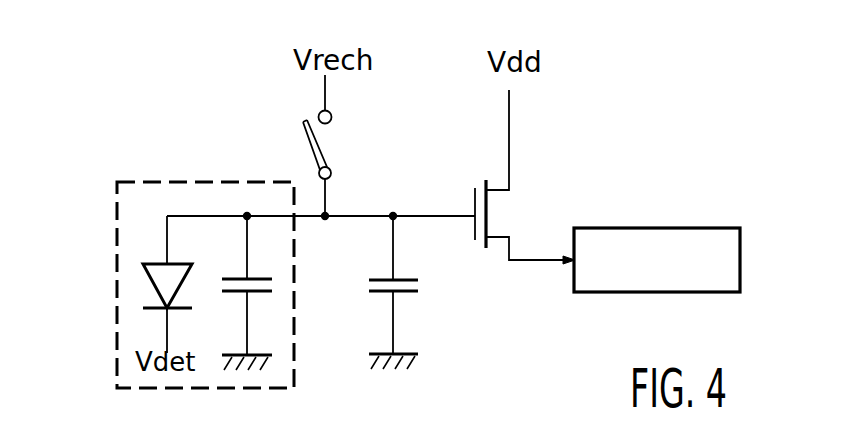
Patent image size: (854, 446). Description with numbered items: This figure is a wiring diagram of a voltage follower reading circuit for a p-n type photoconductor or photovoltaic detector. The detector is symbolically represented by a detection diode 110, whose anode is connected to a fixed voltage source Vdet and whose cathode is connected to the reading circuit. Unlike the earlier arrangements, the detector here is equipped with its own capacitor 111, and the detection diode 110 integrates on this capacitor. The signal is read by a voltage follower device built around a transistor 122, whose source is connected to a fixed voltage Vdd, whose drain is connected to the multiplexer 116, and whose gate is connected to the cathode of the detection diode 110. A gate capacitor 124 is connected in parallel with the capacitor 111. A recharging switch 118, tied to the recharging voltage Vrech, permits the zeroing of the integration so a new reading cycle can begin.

The detection diode 110 is at (152, 277).
The capacitor 111 is at (273, 285).
The multiplexer 116 is at (710, 293).
The recharging switch 118 is at (303, 143).
The transistor 122 is at (475, 186).
The gate capacitor 124 is at (422, 285).